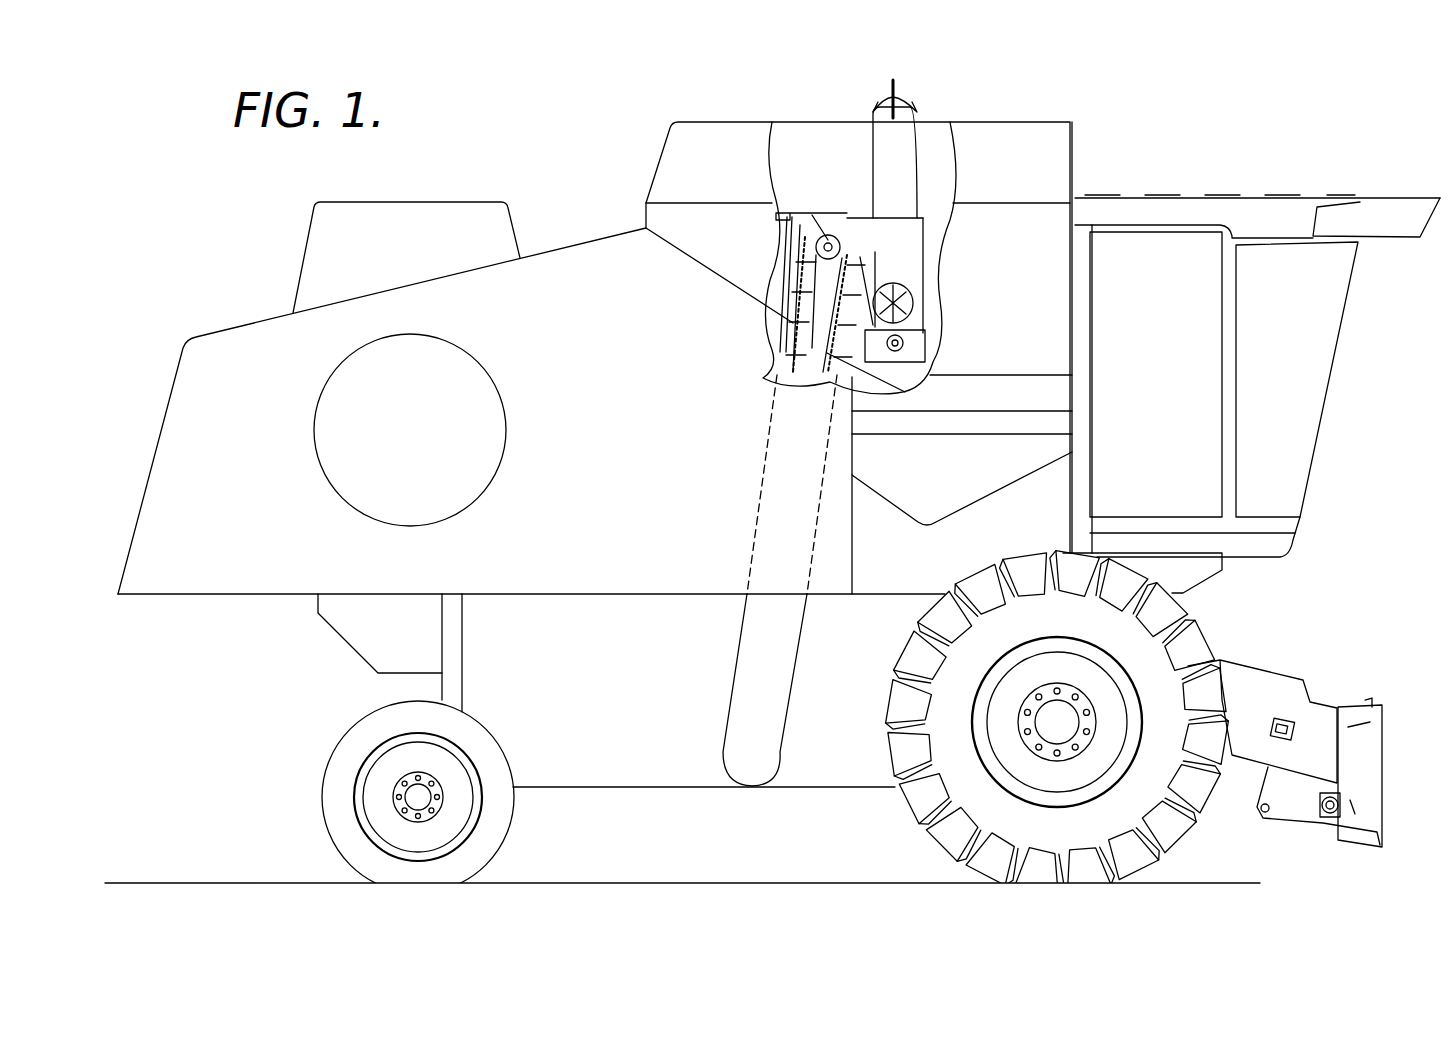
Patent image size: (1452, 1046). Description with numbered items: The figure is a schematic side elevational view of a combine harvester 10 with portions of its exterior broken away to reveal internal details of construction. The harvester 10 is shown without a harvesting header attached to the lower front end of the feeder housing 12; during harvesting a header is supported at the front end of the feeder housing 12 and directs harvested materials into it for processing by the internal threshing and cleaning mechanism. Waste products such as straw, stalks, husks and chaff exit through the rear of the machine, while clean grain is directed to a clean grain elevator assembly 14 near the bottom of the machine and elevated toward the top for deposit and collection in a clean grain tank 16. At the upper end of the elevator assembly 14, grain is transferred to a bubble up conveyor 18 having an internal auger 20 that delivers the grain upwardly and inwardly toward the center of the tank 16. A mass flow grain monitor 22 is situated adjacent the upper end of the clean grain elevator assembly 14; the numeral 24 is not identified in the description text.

The combine harvester 10 is at (1160, 133).
The feeder housing 12 is at (1272, 682).
The clean grain elevator assembly 14 is at (724, 658).
The clean grain tank 16 is at (995, 116).
The bubble up conveyor 18 is at (882, 180).
The internal auger 20 is at (907, 308).
The mass flow grain monitor 22 is at (805, 200).
The clean grain elevator 24 is at (786, 336).